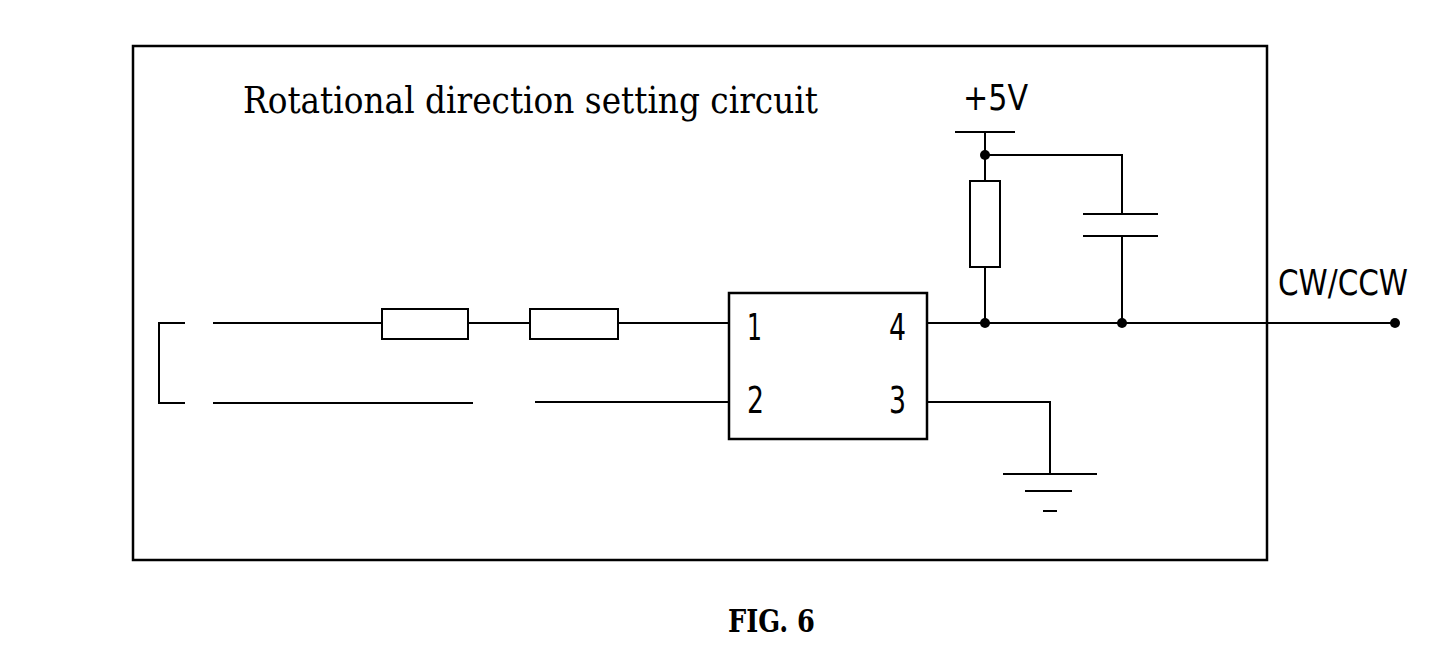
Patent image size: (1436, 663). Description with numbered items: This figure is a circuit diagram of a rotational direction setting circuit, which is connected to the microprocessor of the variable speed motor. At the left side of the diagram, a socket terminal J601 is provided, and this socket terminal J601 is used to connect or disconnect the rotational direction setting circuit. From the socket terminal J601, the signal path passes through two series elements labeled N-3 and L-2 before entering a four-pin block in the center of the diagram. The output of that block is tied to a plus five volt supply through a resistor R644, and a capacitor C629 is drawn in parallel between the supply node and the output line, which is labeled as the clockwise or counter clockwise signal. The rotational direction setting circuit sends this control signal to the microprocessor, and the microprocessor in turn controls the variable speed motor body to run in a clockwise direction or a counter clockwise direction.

The socket terminal J601 is at (181, 332).
The resistor / network element N-3 is at (435, 349).
The inductor / filter element L-2 is at (574, 348).
The pull-up resistor R644 is at (936, 252).
The capacitor C629 is at (1166, 261).